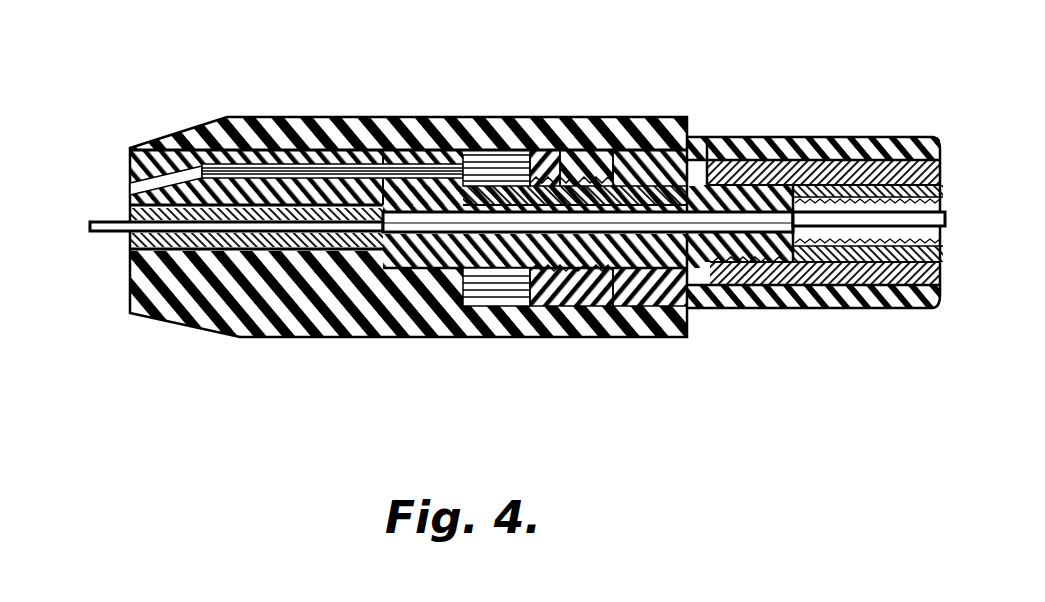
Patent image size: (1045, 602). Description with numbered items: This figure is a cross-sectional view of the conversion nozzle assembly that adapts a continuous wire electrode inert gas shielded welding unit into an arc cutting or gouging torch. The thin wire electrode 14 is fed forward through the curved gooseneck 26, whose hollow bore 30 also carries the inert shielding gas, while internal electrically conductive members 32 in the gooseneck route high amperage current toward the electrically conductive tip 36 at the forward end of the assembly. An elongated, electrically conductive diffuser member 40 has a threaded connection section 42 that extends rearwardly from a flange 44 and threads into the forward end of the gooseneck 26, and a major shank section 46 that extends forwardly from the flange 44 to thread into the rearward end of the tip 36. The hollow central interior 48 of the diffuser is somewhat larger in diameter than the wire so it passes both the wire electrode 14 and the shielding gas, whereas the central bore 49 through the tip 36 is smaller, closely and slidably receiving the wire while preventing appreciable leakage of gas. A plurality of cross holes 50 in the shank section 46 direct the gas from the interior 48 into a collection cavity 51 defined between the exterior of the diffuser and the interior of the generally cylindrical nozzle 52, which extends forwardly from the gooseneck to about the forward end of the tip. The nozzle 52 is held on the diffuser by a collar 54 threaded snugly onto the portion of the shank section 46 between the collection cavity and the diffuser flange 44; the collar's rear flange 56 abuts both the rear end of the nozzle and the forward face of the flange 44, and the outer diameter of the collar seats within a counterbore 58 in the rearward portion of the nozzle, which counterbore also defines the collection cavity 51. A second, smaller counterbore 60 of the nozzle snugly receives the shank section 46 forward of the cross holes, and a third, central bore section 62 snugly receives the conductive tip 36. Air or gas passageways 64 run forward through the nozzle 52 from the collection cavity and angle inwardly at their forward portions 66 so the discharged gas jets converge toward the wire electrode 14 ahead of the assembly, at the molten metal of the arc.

The wire electrode 14 is at (108, 214).
The gooseneck 26 is at (827, 313).
The bore 30 is at (890, 310).
The electrically conductive members 32 is at (862, 138).
The electrically conductive tip 36 is at (133, 277).
The diffuser member 40 is at (508, 290).
The threaded connection section 42 is at (780, 313).
The flange 44 is at (710, 310).
The shank section 46 is at (580, 338).
The central interior 48 is at (368, 338).
The central bore 49 is at (180, 323).
The cross holes 50 is at (481, 160).
The collection cavity 51 is at (527, 150).
The nozzle 52 is at (435, 338).
The collar 54 is at (613, 338).
The rear flange 56 is at (690, 118).
The counterbore 58 is at (622, 118).
The second counterbore 60 is at (427, 170).
The central bore section 62 is at (263, 178).
The gas passageways 64 is at (332, 128).
The forward portions 66 is at (178, 135).